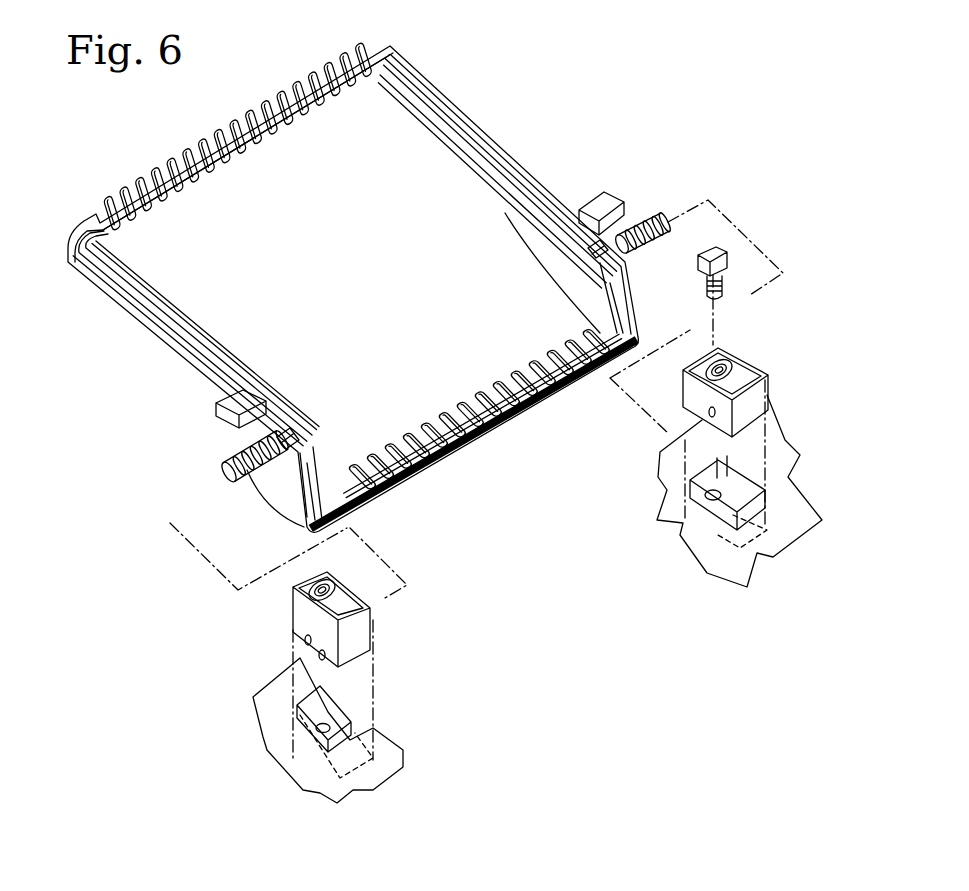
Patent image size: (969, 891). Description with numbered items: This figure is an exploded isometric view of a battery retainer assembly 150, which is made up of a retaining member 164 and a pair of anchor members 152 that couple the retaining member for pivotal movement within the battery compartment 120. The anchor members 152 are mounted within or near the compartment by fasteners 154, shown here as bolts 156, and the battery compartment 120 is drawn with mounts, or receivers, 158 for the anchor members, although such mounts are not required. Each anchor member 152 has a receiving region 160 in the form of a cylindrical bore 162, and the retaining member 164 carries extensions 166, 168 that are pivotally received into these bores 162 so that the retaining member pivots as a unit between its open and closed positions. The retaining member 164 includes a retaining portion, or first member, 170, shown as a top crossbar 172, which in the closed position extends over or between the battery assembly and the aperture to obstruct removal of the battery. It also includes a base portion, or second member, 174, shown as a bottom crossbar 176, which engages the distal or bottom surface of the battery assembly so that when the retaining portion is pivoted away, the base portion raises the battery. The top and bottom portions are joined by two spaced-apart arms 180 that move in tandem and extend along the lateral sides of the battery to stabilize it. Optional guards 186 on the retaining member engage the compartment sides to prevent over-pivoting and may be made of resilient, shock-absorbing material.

The battery compartment 120 is at (797, 511).
The battery retainer assembly 150 is at (116, 563).
The anchor members 152 is at (770, 362).
The fasteners 154 is at (689, 262).
The bolts 156 is at (724, 293).
The mounts 158 is at (700, 505).
The receiving regions 160 is at (306, 642).
The cylindrical bores 162 is at (710, 410).
The retaining member 164 is at (490, 116).
The extension 166 is at (668, 222).
The extension 168 is at (226, 480).
The retaining portion 170 is at (300, 94).
The top crossbar 172 is at (262, 126).
The base portion 174 is at (482, 449).
The bottom crossbar 176 is at (432, 478).
The arms 180 is at (446, 150).
The guards 186 is at (600, 200).